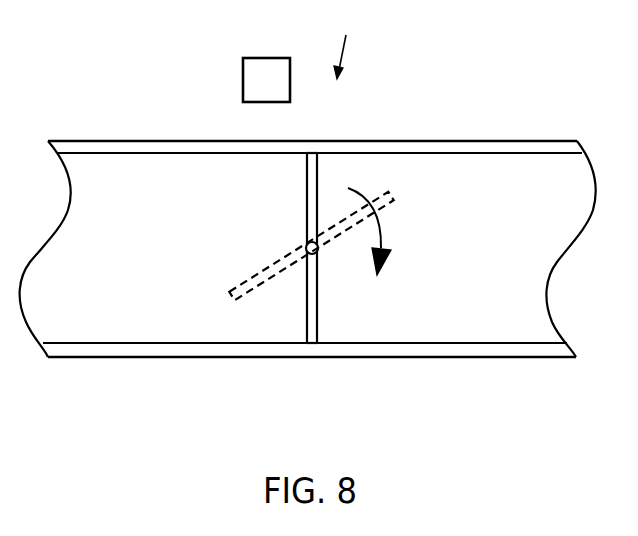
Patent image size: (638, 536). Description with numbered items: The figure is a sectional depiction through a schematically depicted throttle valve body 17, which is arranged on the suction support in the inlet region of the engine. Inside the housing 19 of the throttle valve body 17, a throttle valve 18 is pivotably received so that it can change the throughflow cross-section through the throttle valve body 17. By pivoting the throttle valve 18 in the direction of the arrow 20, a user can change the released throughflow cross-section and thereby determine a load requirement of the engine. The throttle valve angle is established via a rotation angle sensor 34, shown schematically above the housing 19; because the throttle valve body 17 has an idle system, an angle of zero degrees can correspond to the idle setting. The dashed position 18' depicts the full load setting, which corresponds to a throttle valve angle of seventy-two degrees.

The throttle valve body 17 is at (344, 42).
The throttle valve 18 is at (334, 282).
The throttle valve in full load setting 18' is at (311, 301).
The housing 19 is at (499, 140).
The arrow 20 is at (382, 230).
The rotation angle sensor 34 is at (243, 78).